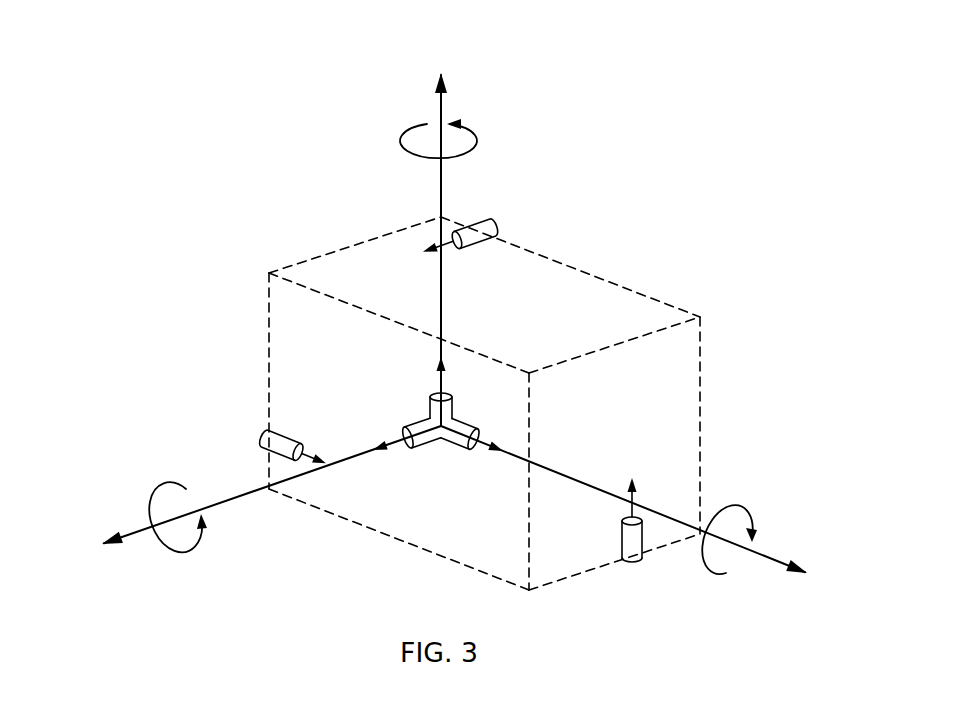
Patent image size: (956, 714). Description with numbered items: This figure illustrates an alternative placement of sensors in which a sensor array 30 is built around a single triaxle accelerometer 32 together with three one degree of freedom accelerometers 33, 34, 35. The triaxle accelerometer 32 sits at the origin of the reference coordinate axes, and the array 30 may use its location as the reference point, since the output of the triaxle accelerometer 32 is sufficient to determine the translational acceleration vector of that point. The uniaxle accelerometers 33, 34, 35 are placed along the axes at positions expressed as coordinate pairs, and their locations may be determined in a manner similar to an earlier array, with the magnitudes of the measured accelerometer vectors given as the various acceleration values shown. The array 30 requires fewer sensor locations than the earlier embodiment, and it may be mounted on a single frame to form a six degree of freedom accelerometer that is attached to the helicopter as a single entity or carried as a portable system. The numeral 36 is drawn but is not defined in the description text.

The sensor array 30 is at (745, 196).
The triaxle accelerometer 32 is at (453, 440).
The one degree of freedom accelerometer 33 is at (266, 432).
The one degree of freedom accelerometer 34 is at (451, 408).
The one degree of freedom accelerometer 35 is at (493, 237).
The sensor emitter / detector unit 36 is at (630, 543).